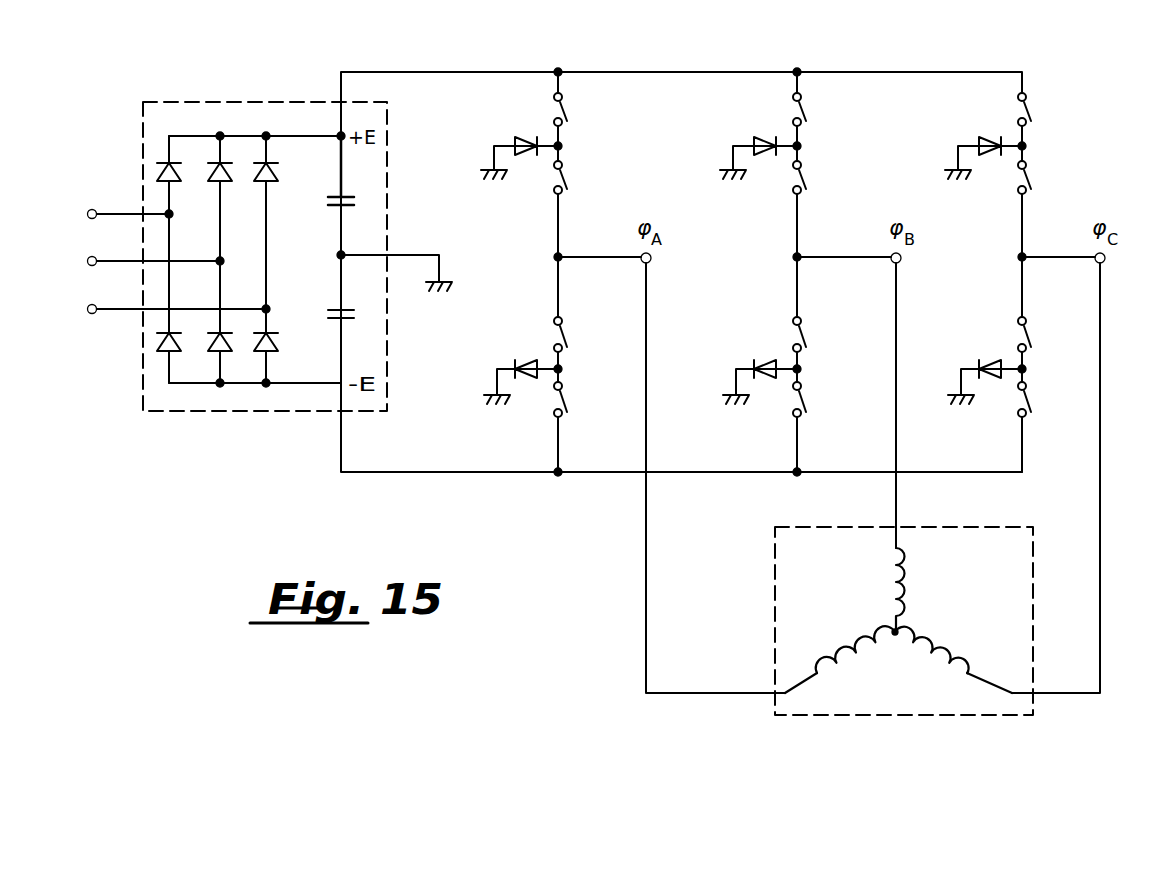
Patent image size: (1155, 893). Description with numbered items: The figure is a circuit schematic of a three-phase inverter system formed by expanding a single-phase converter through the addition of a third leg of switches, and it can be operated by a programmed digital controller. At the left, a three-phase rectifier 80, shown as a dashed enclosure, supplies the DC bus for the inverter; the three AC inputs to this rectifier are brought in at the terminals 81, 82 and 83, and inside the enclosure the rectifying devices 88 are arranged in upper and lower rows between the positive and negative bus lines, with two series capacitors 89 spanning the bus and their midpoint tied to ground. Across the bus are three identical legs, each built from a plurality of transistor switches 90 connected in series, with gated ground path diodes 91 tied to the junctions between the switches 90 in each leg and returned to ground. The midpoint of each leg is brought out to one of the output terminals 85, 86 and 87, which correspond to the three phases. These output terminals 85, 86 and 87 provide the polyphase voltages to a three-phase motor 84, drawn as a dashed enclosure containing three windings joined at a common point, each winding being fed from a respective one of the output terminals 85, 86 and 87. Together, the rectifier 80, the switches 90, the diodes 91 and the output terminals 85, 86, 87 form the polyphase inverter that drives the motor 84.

The three-phase rectifier 80 is at (257, 101).
The first AC input terminal 81 is at (88, 210).
The second AC input terminal 82 is at (88, 257).
The third AC input terminal 83 is at (88, 305).
The three-phase motor 84 is at (1003, 716).
The output terminal 85 is at (651, 262).
The output terminal 86 is at (901, 262).
The output terminal 87 is at (1105, 262).
The rectifier diodes 88 is at (178, 175).
The filter capacitors 89 is at (332, 207).
The switches 90 is at (569, 111).
The gated ground path diodes 91 is at (524, 136).